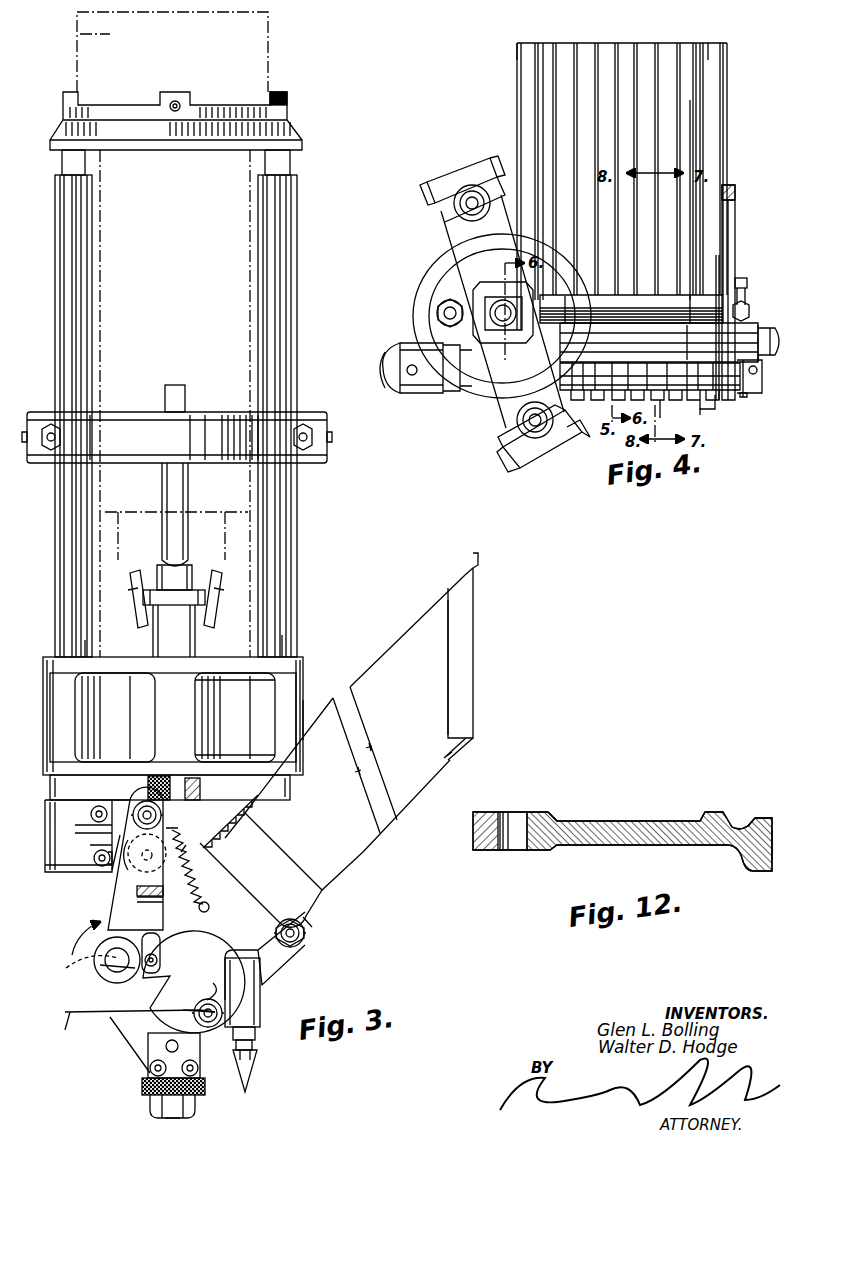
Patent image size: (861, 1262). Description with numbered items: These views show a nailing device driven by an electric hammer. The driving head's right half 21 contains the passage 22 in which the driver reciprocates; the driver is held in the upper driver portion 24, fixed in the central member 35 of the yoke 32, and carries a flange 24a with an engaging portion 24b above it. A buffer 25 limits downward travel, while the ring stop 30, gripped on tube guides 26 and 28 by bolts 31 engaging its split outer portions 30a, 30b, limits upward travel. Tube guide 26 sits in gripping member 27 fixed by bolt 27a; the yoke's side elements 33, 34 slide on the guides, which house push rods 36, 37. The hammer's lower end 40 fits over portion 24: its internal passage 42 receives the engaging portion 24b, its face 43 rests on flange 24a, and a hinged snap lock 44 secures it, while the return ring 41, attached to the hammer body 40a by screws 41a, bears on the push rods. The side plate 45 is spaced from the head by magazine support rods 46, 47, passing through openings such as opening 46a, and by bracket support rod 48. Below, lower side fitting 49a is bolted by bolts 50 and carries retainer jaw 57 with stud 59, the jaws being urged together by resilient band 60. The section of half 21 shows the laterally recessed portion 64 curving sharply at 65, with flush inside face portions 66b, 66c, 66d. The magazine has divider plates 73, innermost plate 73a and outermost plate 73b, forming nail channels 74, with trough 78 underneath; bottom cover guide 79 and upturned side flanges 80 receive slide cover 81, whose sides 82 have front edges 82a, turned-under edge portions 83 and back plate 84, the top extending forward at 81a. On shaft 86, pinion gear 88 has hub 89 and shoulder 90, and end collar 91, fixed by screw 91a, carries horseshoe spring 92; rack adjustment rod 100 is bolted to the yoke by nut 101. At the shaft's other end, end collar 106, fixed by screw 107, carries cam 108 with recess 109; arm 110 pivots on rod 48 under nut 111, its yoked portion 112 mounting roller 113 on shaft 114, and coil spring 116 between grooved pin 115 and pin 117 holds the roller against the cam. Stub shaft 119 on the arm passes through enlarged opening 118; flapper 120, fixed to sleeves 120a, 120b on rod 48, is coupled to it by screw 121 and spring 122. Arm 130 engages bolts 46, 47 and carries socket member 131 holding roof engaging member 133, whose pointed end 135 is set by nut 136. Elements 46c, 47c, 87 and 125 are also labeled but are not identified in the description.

In FIG. 3, the right half 21 is at (133, 1020).
In FIG. 12, the right half 21 is at (600, 848).
In FIG. 12, the passage 22 is at (736, 826).
In FIG. 3, the upper driver portion 24 is at (192, 645).
In FIG. 3, the flange 24a is at (145, 600).
In FIG. 4, the flange 24a is at (506, 344).
In FIG. 3, the engaging portion 24b is at (163, 498).
In FIG. 4, the engaging portion 24b is at (494, 304).
In FIG. 3, the buffer 25 is at (200, 788).
In FIG. 3, the tube guide 26 is at (85, 648).
In FIG. 4, the tube guide 26 is at (516, 432).
In FIG. 3, the gripping member 27 is at (68, 870).
In FIG. 3, the bolt 27a is at (91, 815).
In FIG. 3, the tube guide 28 is at (282, 642).
In FIG. 4, the tube guide 28 is at (454, 205).
In FIG. 3, the ring stop 30 is at (123, 412).
In FIG. 4, the ring stop 30 is at (428, 263).
In FIG. 4, the split outer portion 30a is at (448, 168).
In FIG. 4, the split outer portion 30b is at (473, 160).
In FIG. 3, the bolts 31 is at (60, 437).
In FIG. 3, the yoke 32 is at (198, 672).
In FIG. 4, the yoke 32 is at (441, 230).
In FIG. 3, the side element 33 is at (55, 728).
In FIG. 3, the side element 34 is at (296, 702).
In FIG. 3, the central member 35 is at (200, 723).
In FIG. 3, the push rod 36 is at (88, 158).
In FIG. 3, the push rod 37 is at (290, 158).
In FIG. 3, the electric hammer lower end 40 is at (215, 318).
In FIG. 3, the hammer body 40a is at (88, 35).
In FIG. 3, the return ring 41 is at (225, 118).
In FIG. 3, the screws 41a is at (175, 100).
In FIG. 3, the internal passage 42 is at (190, 488).
In FIG. 3, the face 43 is at (138, 572).
In FIG. 3, the hinged snap lock 44 is at (216, 612).
In FIG. 3, the side plate 45 is at (262, 891).
In FIG. 4, the side plate 45 is at (735, 216).
In FIG. 3, the magazine support rod 46 is at (300, 945).
In FIG. 12, the opening 46a is at (528, 814).
In FIG. 3, the nut 46c is at (306, 933).
In FIG. 3, the magazine support rod 47 is at (194, 1012).
In FIG. 3, the link 47c is at (212, 1000).
In FIG. 3, the bracket support rod 48 is at (140, 802).
In FIG. 4, the bracket support rod 48 is at (648, 324).
In FIG. 3, the lower side fitting 49a is at (196, 1104).
In FIG. 3, the bolts 50 is at (198, 1069).
In FIG. 3, the retainer jaw 57 is at (172, 1118).
In FIG. 3, the stud 59 is at (166, 1050).
In FIG. 3, the band 60 is at (146, 1083).
In FIG. 12, the laterally recessed portion 64 is at (754, 817).
In FIG. 12, the curved portion 65 is at (770, 834).
In FIG. 12, the inside face portion 66b is at (708, 812).
In FIG. 12, the inside face portion 66c is at (766, 819).
In FIG. 12, the inside face portion 66d is at (552, 812).
In FIG. 3, the divider plates 73 is at (292, 902).
In FIG. 4, the divider plates 73 is at (670, 122).
In FIG. 4, the innermost divider plate 73a is at (528, 62).
In FIG. 4, the outermost divider plate 73b is at (714, 54).
In FIG. 4, the nail receiving channels 74 is at (682, 147).
In FIG. 3, the trough 78 is at (146, 1043).
In FIG. 3, the magazine bottom cover guide 79 is at (356, 866).
In FIG. 3, the side flange portions 80 is at (340, 868).
In FIG. 3, the slide cover 81 is at (372, 662).
In FIG. 3, the forward extension 81a is at (230, 823).
In FIG. 3, the sides 82 is at (452, 720).
In FIG. 3, the front edges 82a is at (245, 872).
In FIG. 3, the turned under edge portions 83 is at (238, 812).
In FIG. 3, the back plate 84 is at (474, 683).
In FIG. 3, the shaft 86 is at (105, 965).
In FIG. 4, the shaft 86 is at (560, 396).
In FIG. 4, the comb 87 is at (700, 408).
In FIG. 4, the pinion gear 88 is at (468, 394).
In FIG. 4, the hub 89 is at (418, 395).
In FIG. 4, the shoulder 90 is at (445, 395).
In FIG. 4, the end collar 91 is at (398, 396).
In FIG. 4, the screw 91a is at (406, 362).
In FIG. 4, the horseshoe spring 92 is at (394, 376).
In FIG. 4, the rack adjustment rod 100 is at (450, 304).
In FIG. 4, the nut 101 is at (455, 326).
In FIG. 3, the end collar 106 is at (120, 946).
In FIG. 4, the end collar 106 is at (750, 386).
In FIG. 3, the screw 107 is at (70, 955).
In FIG. 4, the screw 107 is at (762, 370).
In FIG. 3, the cam 108 is at (88, 1000).
In FIG. 4, the cam 108 is at (750, 402).
In FIG. 3, the recess 109 is at (158, 968).
In FIG. 3, the arm 110 is at (137, 893).
In FIG. 4, the nut 111 is at (765, 340).
In FIG. 3, the yoked lower portion 112 is at (163, 904).
In FIG. 3, the roller 113 is at (161, 962).
In FIG. 3, the shaft 114 is at (148, 978).
In FIG. 3, the grooved pin 115 is at (188, 862).
In FIG. 4, the grooved pin 115 is at (749, 322).
In FIG. 3, the resilient coil spring 116 is at (199, 888).
In FIG. 4, the resilient coil spring 116 is at (748, 305).
In FIG. 3, the pin 117 is at (209, 906).
In FIG. 4, the pin 117 is at (748, 290).
In FIG. 3, the enlarged opening 118 is at (158, 893).
In FIG. 3, the stub shaft 119 is at (134, 870).
In FIG. 4, the flapper 120 is at (606, 324).
In FIG. 4, the sleeve 120a is at (676, 324).
In FIG. 4, the sleeve 120b is at (556, 324).
In FIG. 3, the screw 121 is at (102, 867).
In FIG. 4, the screw 121 is at (700, 415).
In FIG. 3, the spring 122 is at (130, 852).
In FIG. 4, the spring 122 is at (671, 413).
In FIG. 4, the bracket 125 is at (708, 300).
In FIG. 3, the arm 130 is at (280, 963).
In FIG. 3, the socket member 131 is at (262, 1008).
In FIG. 3, the roof engaging member 133 is at (254, 1045).
In FIG. 3, the pointed lower end 135 is at (252, 1072).
In FIG. 3, the nut 136 is at (258, 1033).